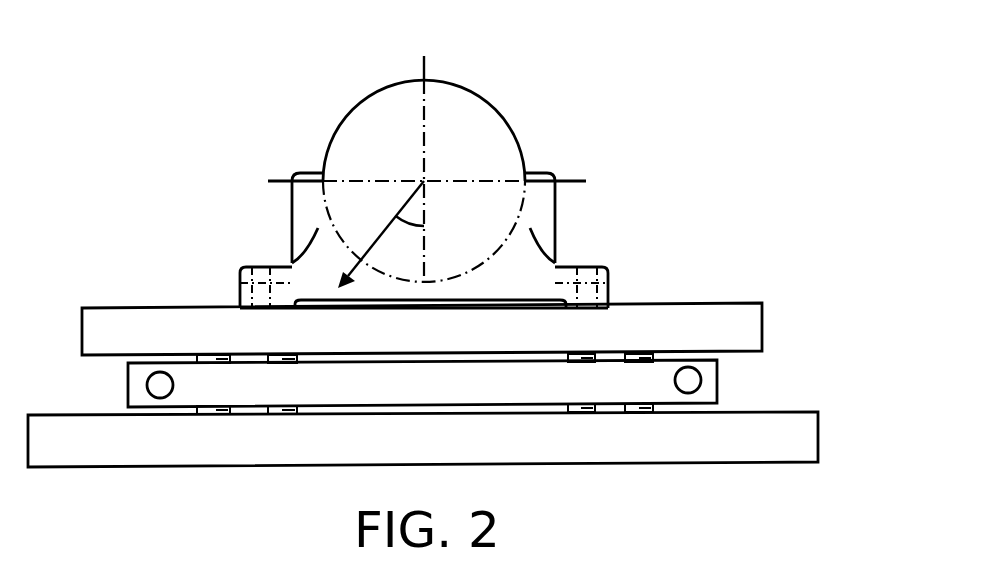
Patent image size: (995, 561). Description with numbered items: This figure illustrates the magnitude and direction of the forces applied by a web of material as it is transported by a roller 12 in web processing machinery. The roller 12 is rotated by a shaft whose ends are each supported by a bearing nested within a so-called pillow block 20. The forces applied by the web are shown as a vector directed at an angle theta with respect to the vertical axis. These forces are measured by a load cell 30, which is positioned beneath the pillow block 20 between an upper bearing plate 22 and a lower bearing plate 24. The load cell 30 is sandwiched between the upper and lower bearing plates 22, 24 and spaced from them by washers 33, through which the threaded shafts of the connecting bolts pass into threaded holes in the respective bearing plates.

The roller 12 is at (490, 100).
The pillow block 20 is at (556, 218).
The upper bearing plate 22 is at (762, 312).
The lower bearing plate 24 is at (818, 437).
The load cell 30 is at (738, 381).
The washers 33 is at (268, 356).